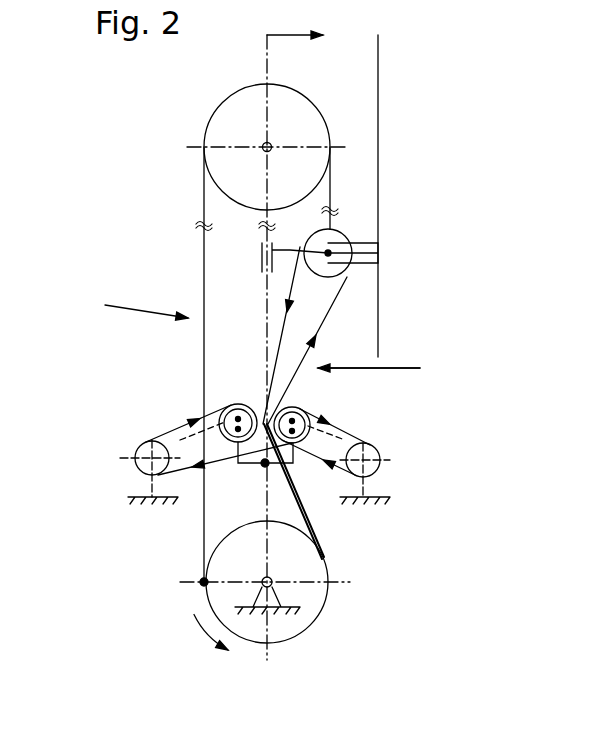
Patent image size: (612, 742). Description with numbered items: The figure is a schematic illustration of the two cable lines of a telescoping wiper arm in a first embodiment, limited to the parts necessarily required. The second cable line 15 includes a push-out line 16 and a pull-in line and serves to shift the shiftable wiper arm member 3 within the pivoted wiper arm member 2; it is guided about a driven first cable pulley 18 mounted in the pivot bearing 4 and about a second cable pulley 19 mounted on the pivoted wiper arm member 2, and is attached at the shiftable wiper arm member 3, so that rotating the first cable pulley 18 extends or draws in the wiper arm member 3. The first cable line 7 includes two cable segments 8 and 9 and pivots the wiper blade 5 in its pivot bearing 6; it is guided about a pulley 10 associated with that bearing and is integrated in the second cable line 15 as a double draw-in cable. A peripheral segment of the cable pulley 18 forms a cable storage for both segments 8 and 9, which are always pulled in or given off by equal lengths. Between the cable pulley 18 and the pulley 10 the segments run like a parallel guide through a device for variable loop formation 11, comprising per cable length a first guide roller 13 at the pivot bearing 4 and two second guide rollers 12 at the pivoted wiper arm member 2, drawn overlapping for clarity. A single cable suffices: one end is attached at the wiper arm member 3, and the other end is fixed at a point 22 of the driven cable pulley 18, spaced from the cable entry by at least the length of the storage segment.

The pivoted wiper arm member 2 is at (270, 178).
The shiftable wiper arm member 3 is at (258, 244).
The pivot bearing 4 is at (125, 503).
The wiper blade 5 is at (380, 88).
The pivot bearing 6 is at (380, 251).
The first cable line 7 is at (406, 369).
The cable segment 8 is at (292, 297).
The cable segment 9 is at (320, 447).
The pulley 10 is at (345, 234).
The device for variable loop formation 11 is at (234, 465).
The second guide rollers 12 is at (280, 407).
The first guide roller 13 is at (140, 448).
The second cable line 15 is at (126, 303).
The push-out line 16 is at (203, 282).
The driven first cable pulley 18 is at (310, 626).
The second cable pulley 19 is at (240, 112).
The point 22 is at (203, 583).